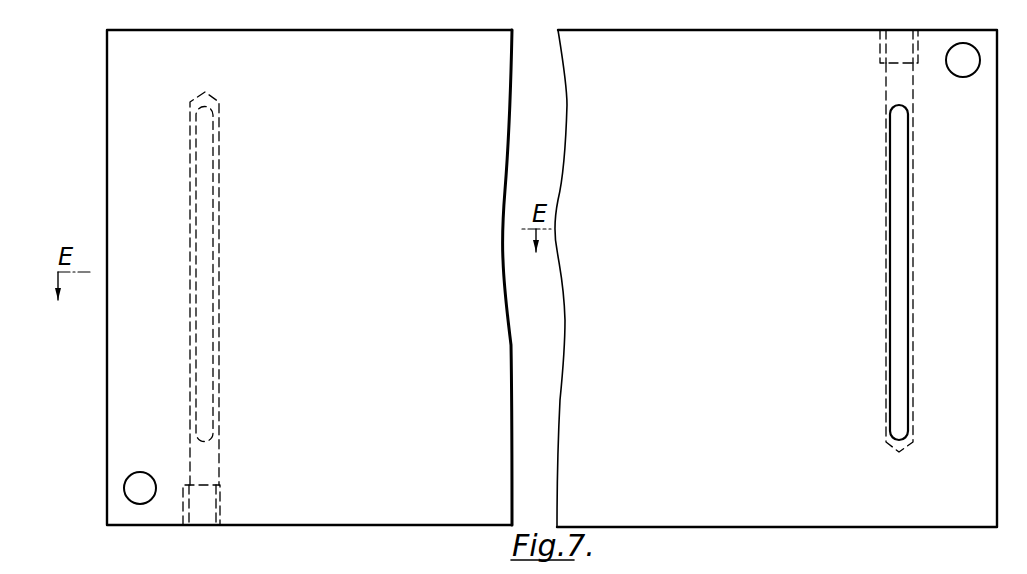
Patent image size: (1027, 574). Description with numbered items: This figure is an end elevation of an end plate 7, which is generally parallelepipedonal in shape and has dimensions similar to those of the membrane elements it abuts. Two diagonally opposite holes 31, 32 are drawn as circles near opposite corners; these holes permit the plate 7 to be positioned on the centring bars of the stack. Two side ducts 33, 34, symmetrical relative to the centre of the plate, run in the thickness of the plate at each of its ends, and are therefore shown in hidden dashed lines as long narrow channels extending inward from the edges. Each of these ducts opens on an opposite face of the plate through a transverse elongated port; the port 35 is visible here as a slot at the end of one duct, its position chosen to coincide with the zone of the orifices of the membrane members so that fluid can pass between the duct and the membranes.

The end plate 7 is at (763, 256).
The hole 31 is at (961, 65).
The hole 32 is at (134, 483).
The duct 33 is at (878, 44).
The duct 34 is at (210, 461).
The transverse elongated port 35 is at (892, 337).